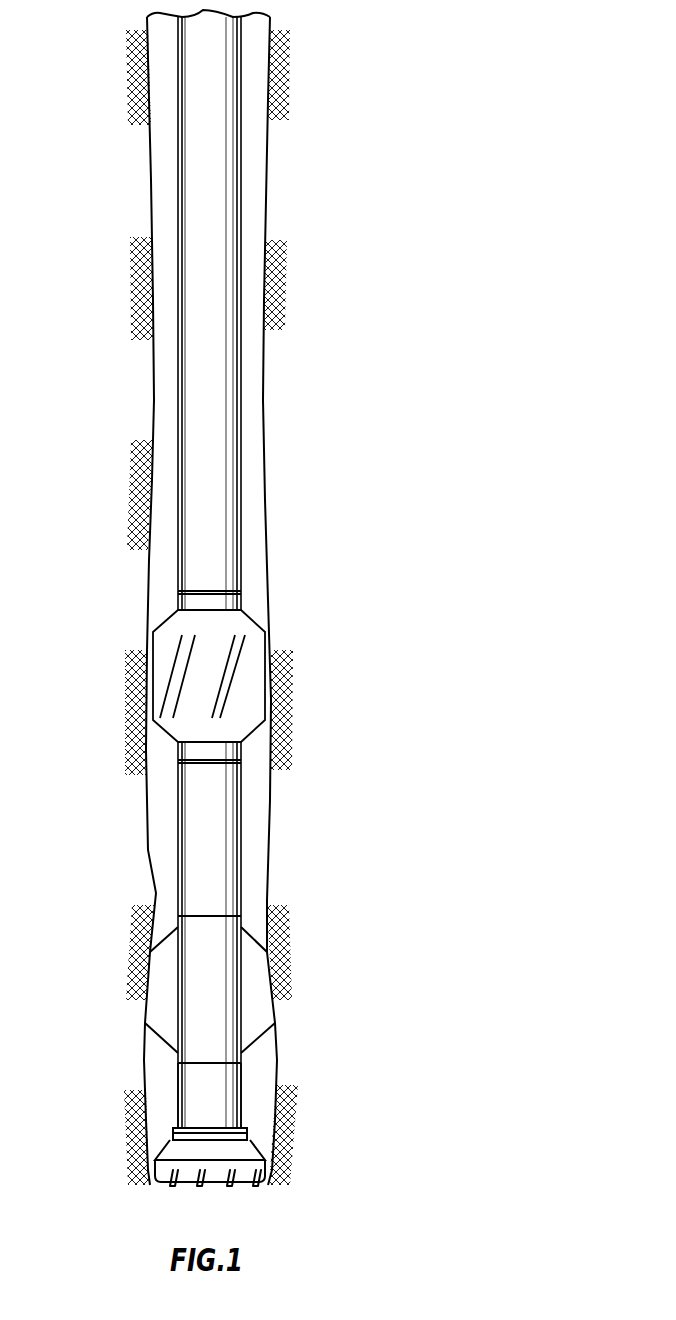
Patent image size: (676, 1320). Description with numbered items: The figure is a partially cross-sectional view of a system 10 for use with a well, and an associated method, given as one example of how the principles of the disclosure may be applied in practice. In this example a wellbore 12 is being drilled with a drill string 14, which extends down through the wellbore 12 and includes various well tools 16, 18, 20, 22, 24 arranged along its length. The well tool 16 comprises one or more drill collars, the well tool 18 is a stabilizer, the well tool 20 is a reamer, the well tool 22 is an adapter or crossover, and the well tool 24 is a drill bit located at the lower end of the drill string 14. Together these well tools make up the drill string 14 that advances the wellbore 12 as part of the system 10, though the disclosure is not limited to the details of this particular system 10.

The system 10 is at (452, 66).
The wellbore 12 is at (153, 422).
The drill string 14 is at (252, 383).
The well tool 16 is at (180, 175).
The well tool 18 is at (254, 622).
The well tool 20 is at (147, 1003).
The well tool 22 is at (243, 1075).
The well tool 24 is at (120, 1142).